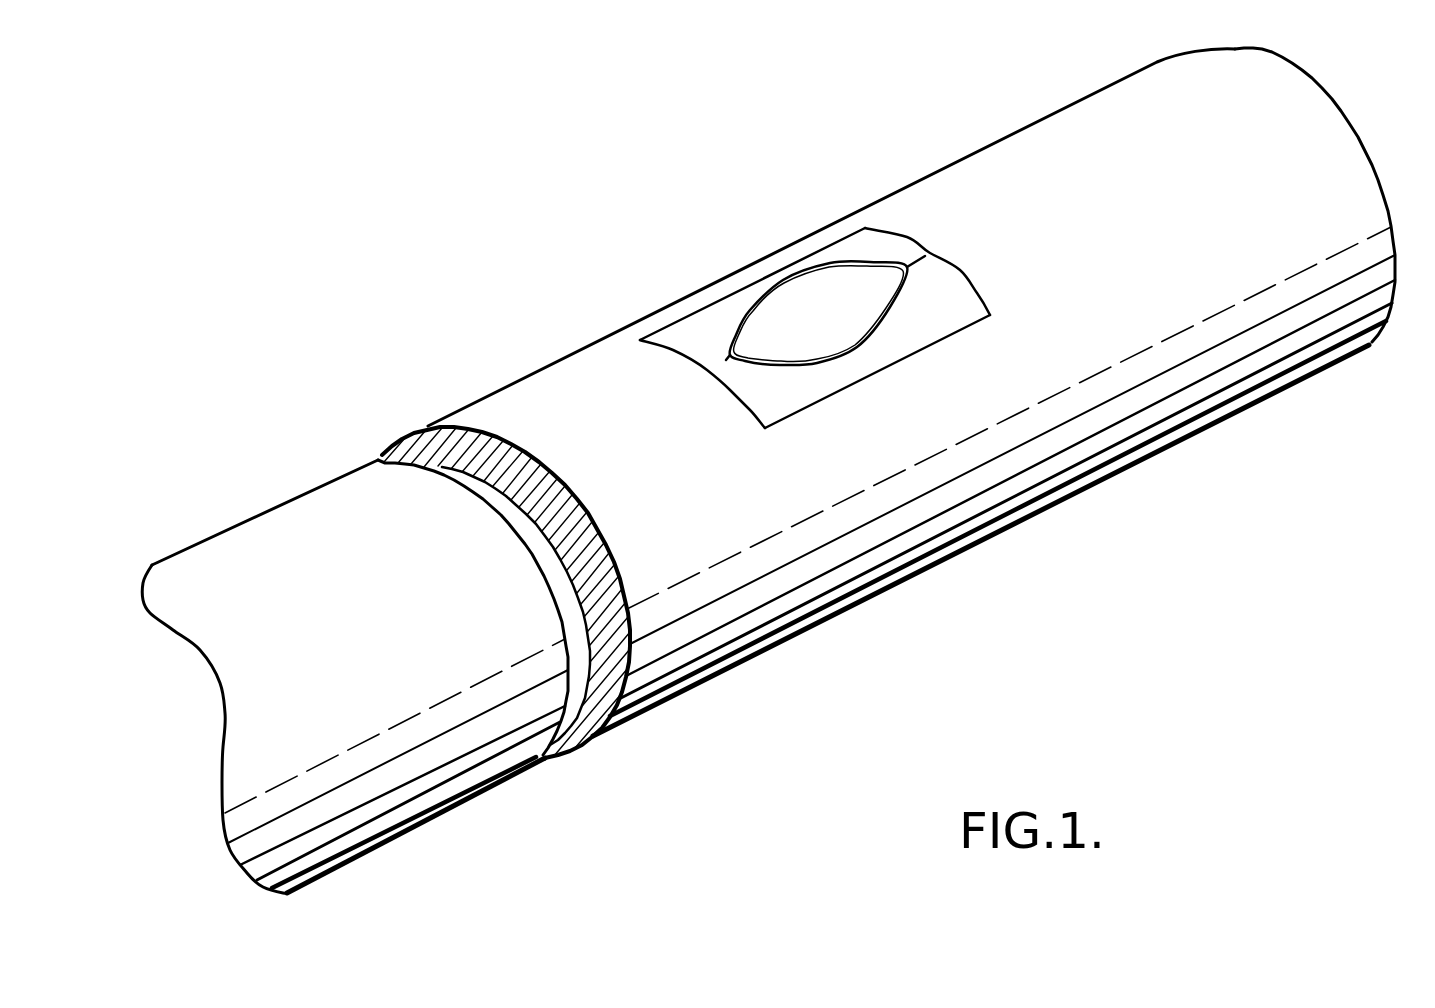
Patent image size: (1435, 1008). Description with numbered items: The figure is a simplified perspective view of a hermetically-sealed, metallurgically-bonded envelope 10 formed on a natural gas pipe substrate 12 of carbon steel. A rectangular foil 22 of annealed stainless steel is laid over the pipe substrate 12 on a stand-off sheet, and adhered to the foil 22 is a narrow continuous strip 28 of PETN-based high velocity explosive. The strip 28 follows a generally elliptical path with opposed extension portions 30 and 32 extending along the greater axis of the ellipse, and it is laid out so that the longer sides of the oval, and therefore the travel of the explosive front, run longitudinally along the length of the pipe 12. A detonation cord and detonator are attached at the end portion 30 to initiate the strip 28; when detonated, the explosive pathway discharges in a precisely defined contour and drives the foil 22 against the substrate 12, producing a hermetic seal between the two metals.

The hermetically-sealed metallurgically-bonded envelope 10 is at (1013, 594).
The pipe substrate 12 is at (1268, 333).
The foil 22 is at (893, 352).
The explosive strip 28 is at (812, 270).
The extension portion 30 is at (723, 363).
The extension portion 32 is at (940, 255).